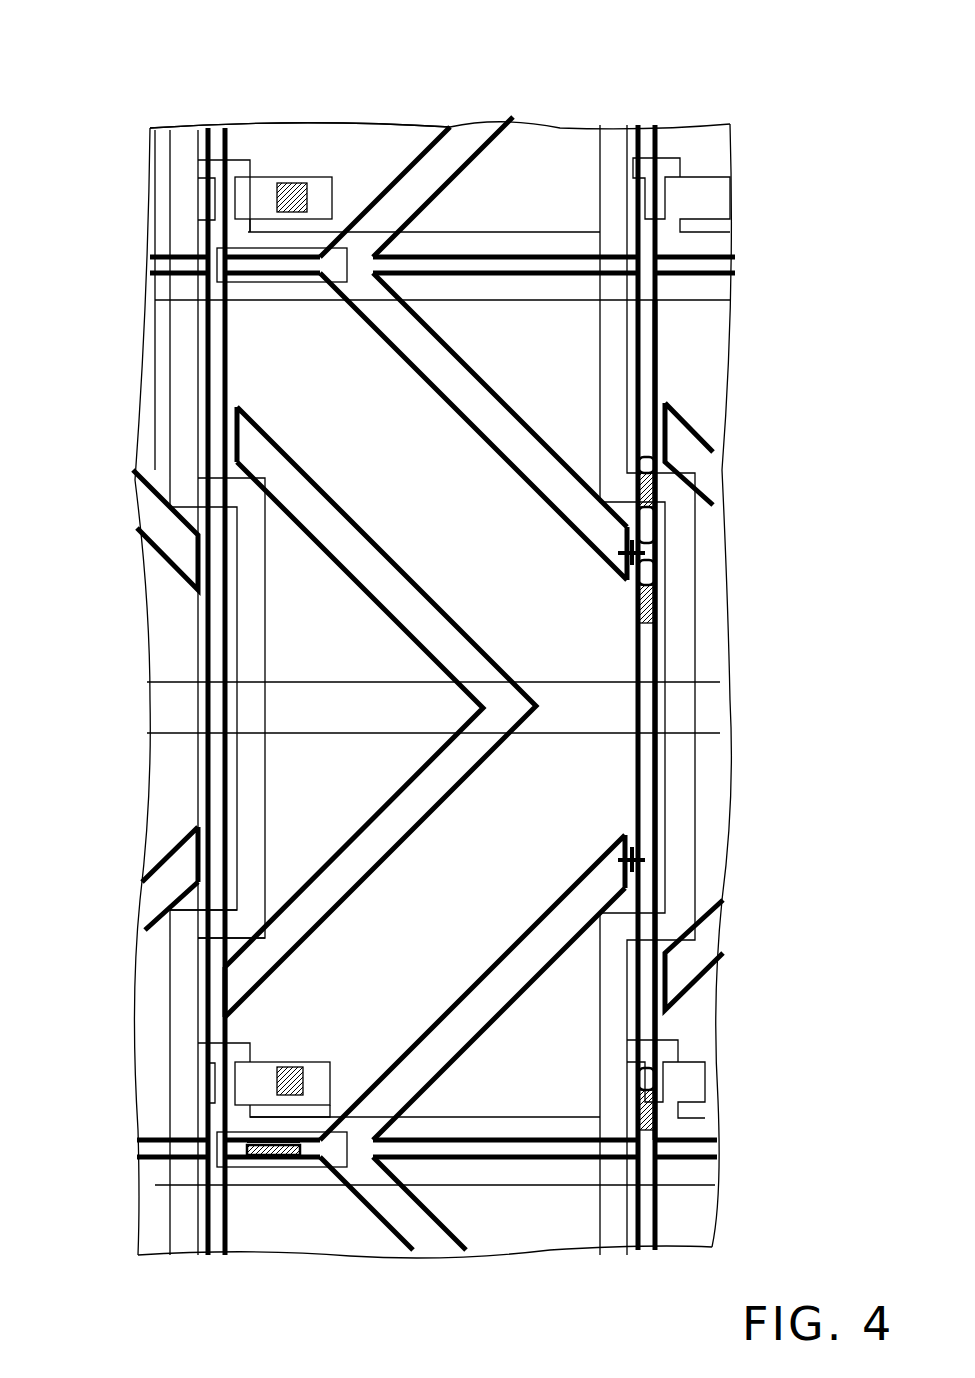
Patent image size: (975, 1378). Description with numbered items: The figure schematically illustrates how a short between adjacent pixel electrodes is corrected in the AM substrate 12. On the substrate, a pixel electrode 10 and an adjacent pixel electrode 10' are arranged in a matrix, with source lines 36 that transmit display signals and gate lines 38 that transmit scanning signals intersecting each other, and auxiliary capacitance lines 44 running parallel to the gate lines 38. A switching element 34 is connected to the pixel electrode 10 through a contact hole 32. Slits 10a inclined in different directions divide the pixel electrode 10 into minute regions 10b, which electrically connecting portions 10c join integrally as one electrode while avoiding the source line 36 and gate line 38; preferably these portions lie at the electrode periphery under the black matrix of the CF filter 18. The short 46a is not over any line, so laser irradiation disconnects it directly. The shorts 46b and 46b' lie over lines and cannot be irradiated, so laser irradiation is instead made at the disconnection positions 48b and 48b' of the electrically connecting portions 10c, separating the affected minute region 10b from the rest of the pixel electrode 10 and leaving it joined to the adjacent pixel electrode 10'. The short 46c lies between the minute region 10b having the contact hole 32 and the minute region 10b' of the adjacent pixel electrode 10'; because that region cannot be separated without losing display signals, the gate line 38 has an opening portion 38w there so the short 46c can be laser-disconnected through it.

The AM substrate 12 is at (472, 100).
The CF filter 18 is at (543, 100).
The source line 36 is at (190, 135).
The gate line 38 is at (718, 248).
The pixel electrode 10 is at (492, 671).
The adjacent pixel electrode 10' is at (702, 818).
The slit 10a is at (525, 420).
The minute region 10b is at (593, 223).
The minute region of adjacent pixel electrode 10b' is at (393, 1246).
The electrically connecting portion 10c is at (633, 543).
The short 46a is at (658, 603).
The short 46b is at (752, 490).
The short 46b' is at (755, 1110).
The short 46c is at (273, 1163).
The disconnection position 48b is at (742, 565).
The disconnection position 48b' is at (745, 861).
The auxiliary capacitance line 44 is at (147, 720).
The switching element 34 is at (226, 1028).
The contact hole 32 is at (303, 1080).
The opening portion 38w is at (253, 1167).